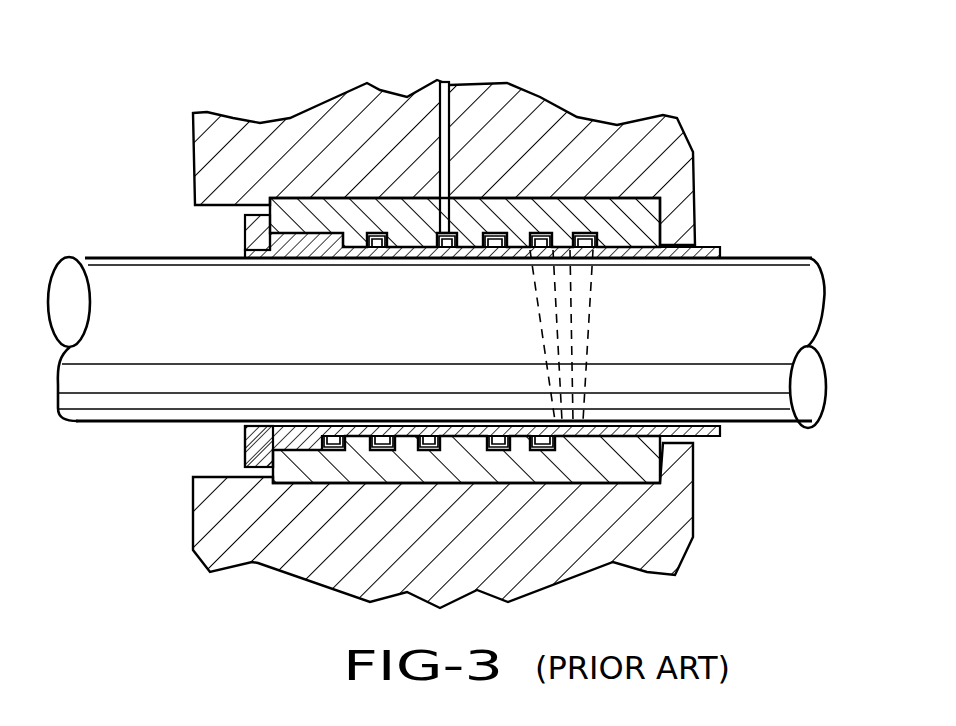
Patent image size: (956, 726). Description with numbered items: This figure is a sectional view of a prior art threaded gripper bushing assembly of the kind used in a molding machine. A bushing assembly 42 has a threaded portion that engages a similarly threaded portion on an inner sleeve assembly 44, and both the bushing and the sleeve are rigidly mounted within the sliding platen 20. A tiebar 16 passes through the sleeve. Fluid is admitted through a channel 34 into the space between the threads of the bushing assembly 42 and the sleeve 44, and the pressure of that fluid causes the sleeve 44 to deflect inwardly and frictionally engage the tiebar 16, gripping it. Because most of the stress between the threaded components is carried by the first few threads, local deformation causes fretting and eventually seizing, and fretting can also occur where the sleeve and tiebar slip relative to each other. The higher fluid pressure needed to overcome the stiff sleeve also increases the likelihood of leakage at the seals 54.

The tiebar 16 is at (237, 343).
The sliding platen 20 is at (663, 165).
The channel 34 is at (440, 137).
The bushing assembly 42 is at (653, 217).
The inner sleeve assembly 44 is at (713, 248).
The seals 54 is at (307, 455).